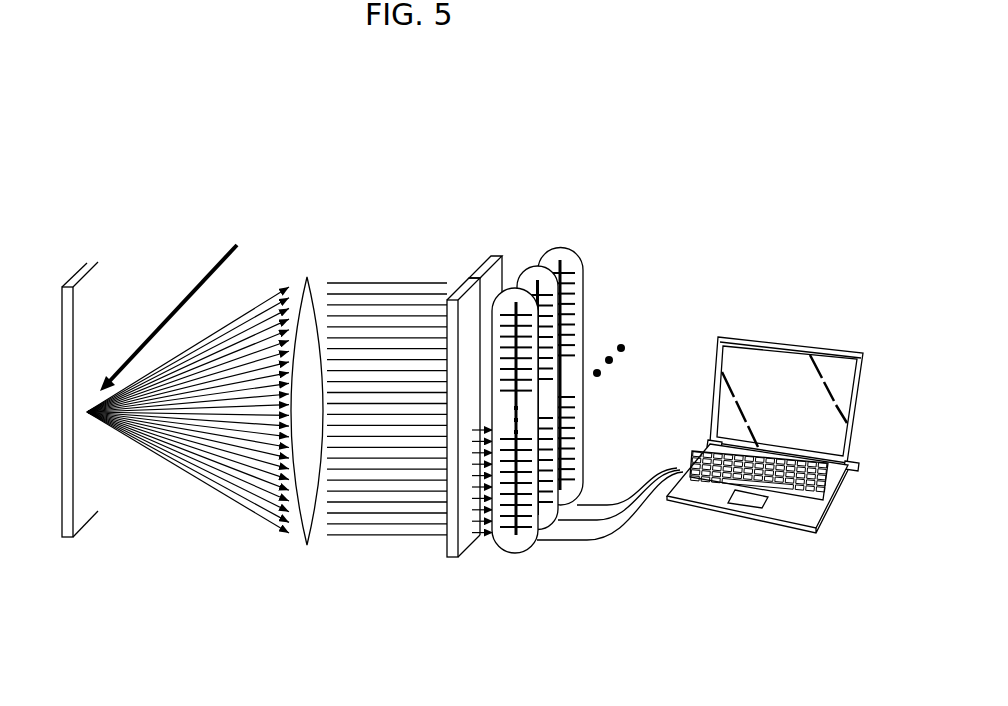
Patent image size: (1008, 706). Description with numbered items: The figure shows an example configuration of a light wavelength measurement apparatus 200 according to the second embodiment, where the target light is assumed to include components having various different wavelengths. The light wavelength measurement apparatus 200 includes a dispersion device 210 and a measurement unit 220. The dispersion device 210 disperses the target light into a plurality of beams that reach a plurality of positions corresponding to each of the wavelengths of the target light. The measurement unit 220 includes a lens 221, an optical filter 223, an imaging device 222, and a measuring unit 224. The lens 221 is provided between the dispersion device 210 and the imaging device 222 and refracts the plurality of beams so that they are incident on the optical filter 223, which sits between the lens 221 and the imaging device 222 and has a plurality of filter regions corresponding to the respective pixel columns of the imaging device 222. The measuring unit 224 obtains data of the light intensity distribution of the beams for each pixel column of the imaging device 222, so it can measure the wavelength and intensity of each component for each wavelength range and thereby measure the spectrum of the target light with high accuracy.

The light wavelength measurement apparatus 200 is at (440, 130).
The dispersion device 210 is at (85, 264).
The measurement unit 220 is at (573, 578).
The lens 221 is at (307, 277).
The optical filter 223 is at (471, 278).
The imaging device 222 is at (570, 248).
The measuring unit 224 is at (778, 340).